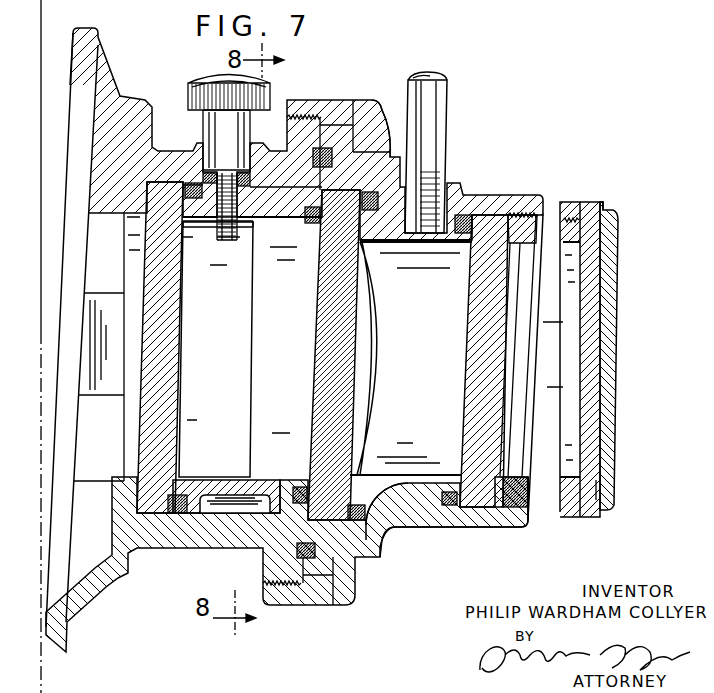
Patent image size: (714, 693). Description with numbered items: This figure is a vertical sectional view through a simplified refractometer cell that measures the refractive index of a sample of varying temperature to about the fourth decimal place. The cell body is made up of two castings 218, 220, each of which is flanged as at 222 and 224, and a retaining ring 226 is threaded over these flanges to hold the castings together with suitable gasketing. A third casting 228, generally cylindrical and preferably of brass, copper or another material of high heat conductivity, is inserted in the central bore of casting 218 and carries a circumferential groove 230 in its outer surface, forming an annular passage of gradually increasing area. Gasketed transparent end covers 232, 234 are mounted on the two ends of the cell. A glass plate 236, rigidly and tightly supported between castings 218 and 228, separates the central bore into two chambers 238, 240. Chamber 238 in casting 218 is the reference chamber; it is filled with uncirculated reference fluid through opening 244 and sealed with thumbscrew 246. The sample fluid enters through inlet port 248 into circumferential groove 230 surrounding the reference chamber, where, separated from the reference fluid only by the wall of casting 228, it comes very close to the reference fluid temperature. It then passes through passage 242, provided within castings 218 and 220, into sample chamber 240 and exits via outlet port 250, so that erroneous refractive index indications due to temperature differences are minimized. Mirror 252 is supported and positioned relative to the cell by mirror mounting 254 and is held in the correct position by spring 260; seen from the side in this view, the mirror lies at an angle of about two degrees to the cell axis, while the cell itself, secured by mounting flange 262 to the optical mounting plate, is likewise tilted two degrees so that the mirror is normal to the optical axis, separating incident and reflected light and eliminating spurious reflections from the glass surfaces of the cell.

The casting 218 is at (179, 542).
The casting 220 is at (416, 520).
The flange 222 is at (303, 128).
The flange 224 is at (337, 126).
The retaining ring 226 is at (365, 103).
The third casting 228 is at (188, 514).
The circumferential groove 230 is at (228, 514).
The transparent end cover 232 is at (140, 267).
The transparent end cover 234 is at (470, 373).
The glass plate 236 is at (323, 338).
The chamber 238 is at (232, 326).
The chamber 240 is at (438, 331).
The passage 242 is at (364, 531).
The opening 244 is at (200, 228).
The thumbscrew 246 is at (191, 96).
The inlet port 248 is at (232, 493).
The outlet port 250 is at (453, 152).
The mirror 252 is at (593, 267).
The mirror mounting 254 is at (612, 305).
The spring 260 is at (545, 526).
The mounting flange 262 is at (120, 82).